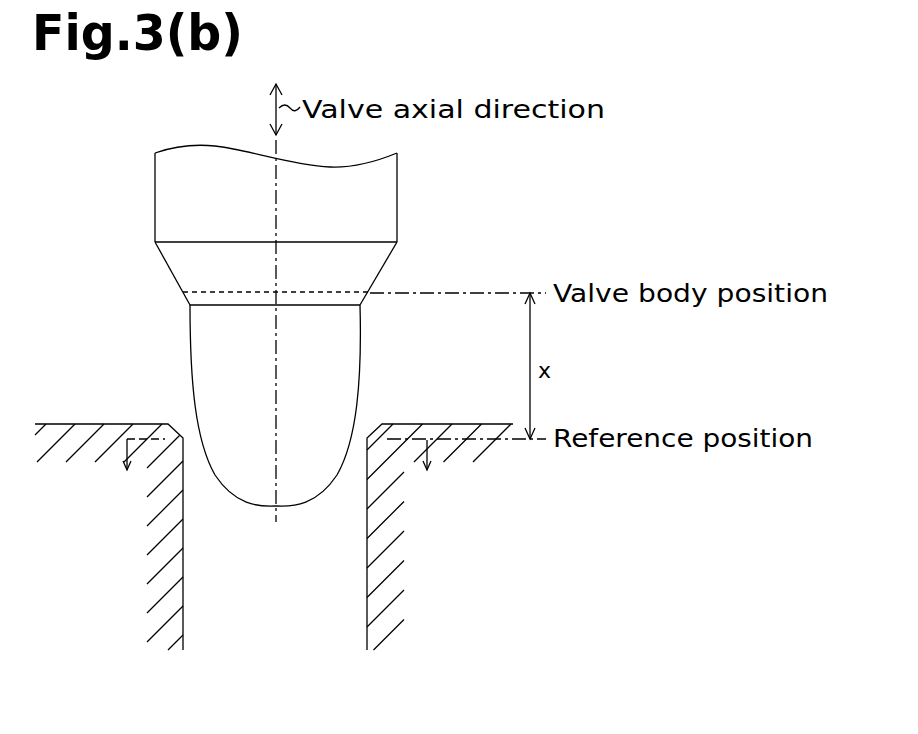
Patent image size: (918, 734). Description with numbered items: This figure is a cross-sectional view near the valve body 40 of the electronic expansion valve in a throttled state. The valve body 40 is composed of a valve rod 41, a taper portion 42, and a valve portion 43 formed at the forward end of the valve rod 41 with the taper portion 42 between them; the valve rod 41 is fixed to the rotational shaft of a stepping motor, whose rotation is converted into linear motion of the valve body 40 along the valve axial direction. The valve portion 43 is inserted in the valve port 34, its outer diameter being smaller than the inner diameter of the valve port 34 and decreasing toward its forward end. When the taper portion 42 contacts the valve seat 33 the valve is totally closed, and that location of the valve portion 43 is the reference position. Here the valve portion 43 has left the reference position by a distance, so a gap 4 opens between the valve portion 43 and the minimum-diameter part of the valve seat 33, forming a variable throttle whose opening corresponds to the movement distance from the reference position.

The valve body 40 is at (452, 146).
The valve rod 41 is at (155, 197).
The taper portion 42 is at (163, 257).
The valve portion 43 is at (190, 365).
The valve seat 33 is at (182, 425).
The valve port 34 is at (368, 650).
The gap between valve and seat 4 is at (276, 474).